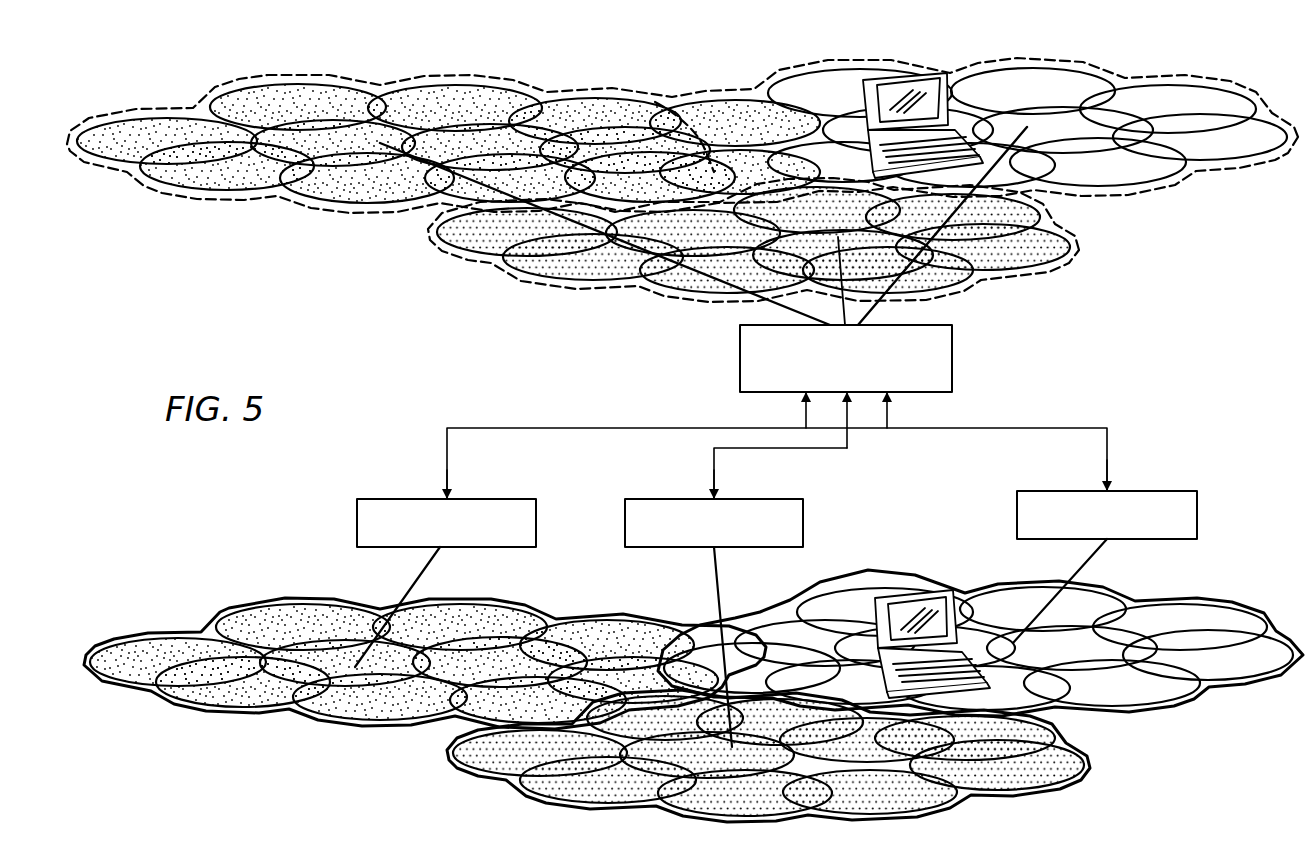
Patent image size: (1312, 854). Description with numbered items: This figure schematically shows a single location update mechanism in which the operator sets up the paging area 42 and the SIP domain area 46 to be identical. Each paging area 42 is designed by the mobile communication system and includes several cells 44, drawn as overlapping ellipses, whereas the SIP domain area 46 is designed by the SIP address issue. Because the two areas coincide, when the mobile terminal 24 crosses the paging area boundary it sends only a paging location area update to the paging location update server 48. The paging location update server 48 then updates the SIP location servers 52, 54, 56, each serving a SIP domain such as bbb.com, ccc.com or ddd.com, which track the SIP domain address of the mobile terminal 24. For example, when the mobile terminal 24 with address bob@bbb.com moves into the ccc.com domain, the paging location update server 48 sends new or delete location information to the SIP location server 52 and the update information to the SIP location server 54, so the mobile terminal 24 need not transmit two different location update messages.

The mobile terminal 24 is at (876, 88).
The paging area 42 is at (519, 72).
The cell 44 is at (1034, 95).
The SIP domain area 46 is at (343, 727).
The paging location update server 48 is at (952, 377).
The SIP location server 52 is at (1197, 524).
The SIP location server 54 is at (803, 536).
The SIP location server 56 is at (357, 538).